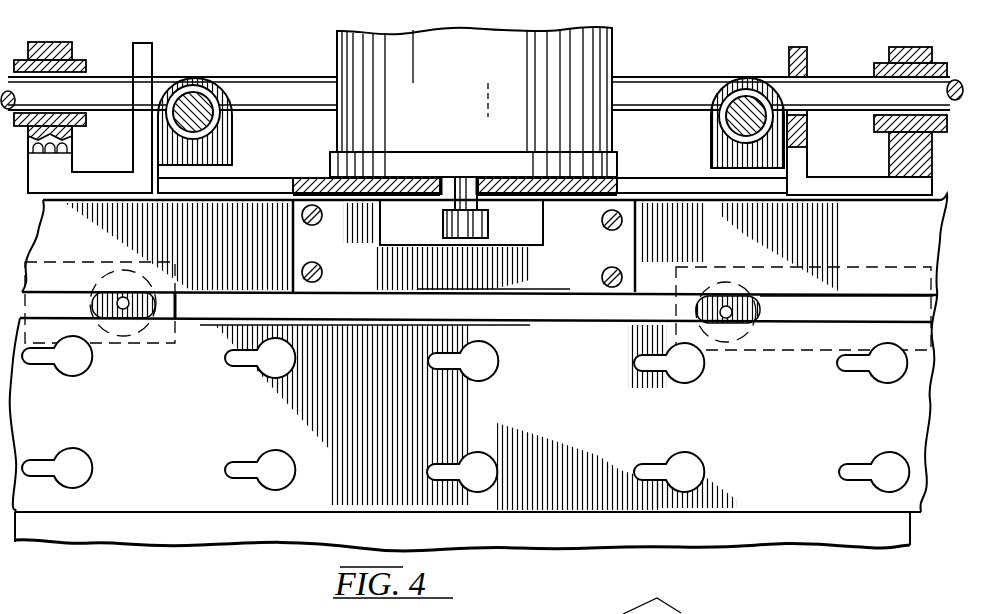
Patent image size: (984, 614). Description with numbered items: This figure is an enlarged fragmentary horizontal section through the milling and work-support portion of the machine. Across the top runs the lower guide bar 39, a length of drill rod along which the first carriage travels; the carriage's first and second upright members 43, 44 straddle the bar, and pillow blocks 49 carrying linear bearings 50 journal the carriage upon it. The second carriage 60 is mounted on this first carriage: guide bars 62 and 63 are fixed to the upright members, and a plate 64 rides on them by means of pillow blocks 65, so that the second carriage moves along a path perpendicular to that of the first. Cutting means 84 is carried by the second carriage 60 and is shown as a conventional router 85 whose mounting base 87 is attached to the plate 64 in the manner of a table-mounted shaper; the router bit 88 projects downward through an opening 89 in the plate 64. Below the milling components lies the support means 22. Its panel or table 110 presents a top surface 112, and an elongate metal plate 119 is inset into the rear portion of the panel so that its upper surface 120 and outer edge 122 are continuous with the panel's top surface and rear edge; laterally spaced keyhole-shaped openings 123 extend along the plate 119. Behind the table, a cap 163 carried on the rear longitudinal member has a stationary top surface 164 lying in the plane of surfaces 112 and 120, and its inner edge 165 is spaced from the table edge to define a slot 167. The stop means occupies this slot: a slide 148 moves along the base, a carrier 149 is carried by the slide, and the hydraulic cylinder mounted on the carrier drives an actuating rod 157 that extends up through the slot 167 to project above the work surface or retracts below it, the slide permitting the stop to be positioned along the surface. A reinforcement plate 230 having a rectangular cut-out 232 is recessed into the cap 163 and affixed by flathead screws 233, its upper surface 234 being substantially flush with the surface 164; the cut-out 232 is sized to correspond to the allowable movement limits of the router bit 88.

The support means 22 is at (810, 549).
The lower guide bar 39 is at (824, 80).
The first upright member 43 is at (799, 47).
The second upright member 44 is at (148, 44).
The pillow block 49 is at (919, 47).
The linear bearing 50 is at (82, 62).
The second carriage 60 is at (272, 176).
The guide bar 62 is at (195, 97).
The guide bar 63 is at (744, 108).
The plate 64 is at (661, 178).
The pillow block 65 is at (248, 143).
The cutting means 84 is at (612, 56).
The router 85 is at (466, 48).
The mounting base 87 is at (482, 160).
The router bit 88 is at (488, 217).
The opening 89 is at (447, 194).
The panel 110 is at (138, 546).
The top surface 112 is at (230, 530).
The elongate plate 119 is at (921, 503).
The upper surface 120 is at (113, 488).
The outer edge 122 is at (386, 316).
The keyhole-shaped openings 123 is at (489, 404).
The slide 148 is at (802, 118).
The carrier 149 is at (178, 306).
The actuating rod 157 is at (118, 302).
The cap 163 is at (945, 198).
The top surface 164 is at (918, 254).
The inner edge 165 is at (900, 298).
The slot 167 is at (563, 308).
The reinforcement plate 230 is at (623, 244).
The rectangular cut-out 232 is at (393, 208).
The flathead screws 233 is at (322, 272).
The upper surface 234 is at (485, 278).